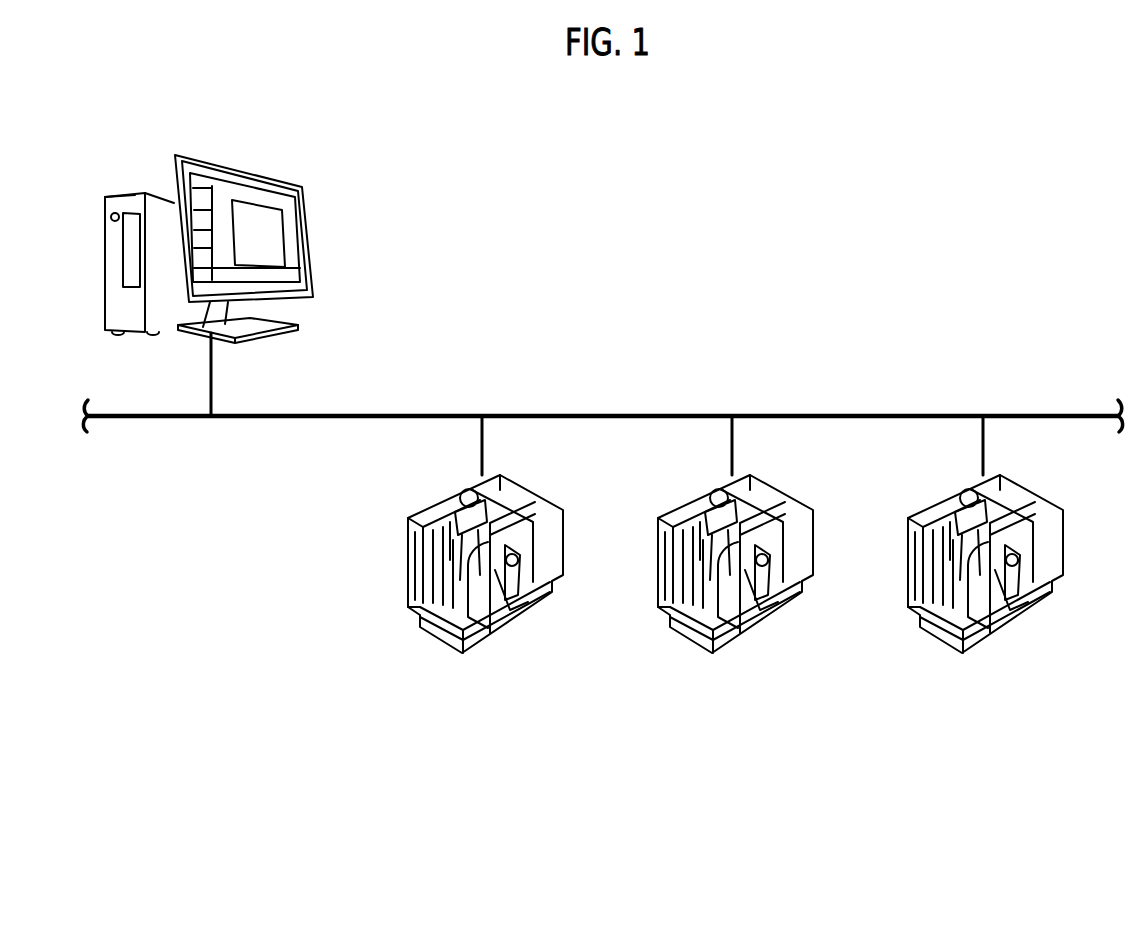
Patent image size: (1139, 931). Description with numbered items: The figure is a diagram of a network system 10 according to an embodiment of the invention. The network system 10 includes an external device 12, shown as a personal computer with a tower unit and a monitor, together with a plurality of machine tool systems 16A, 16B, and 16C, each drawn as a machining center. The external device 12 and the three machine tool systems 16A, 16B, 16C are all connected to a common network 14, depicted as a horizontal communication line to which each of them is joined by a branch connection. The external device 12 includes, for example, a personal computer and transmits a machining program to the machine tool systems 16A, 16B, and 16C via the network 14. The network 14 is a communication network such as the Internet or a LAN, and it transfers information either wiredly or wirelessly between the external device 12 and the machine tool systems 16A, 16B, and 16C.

The network system 10 is at (951, 133).
The external device 12 is at (240, 164).
The network 14 is at (645, 412).
The machine tool system 16A is at (492, 661).
The machine tool system 16B is at (763, 660).
The machine tool system 16C is at (1007, 660).